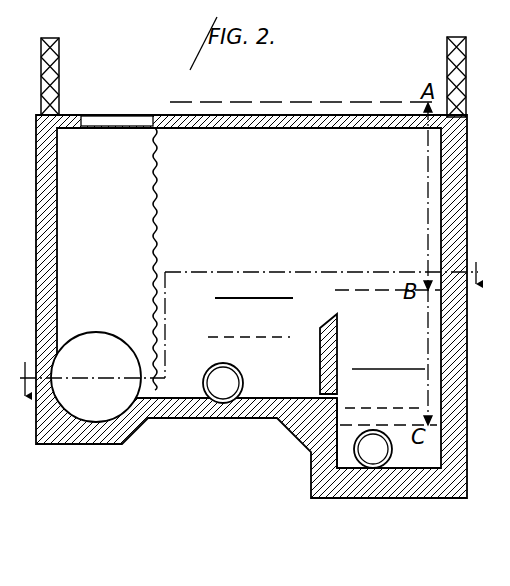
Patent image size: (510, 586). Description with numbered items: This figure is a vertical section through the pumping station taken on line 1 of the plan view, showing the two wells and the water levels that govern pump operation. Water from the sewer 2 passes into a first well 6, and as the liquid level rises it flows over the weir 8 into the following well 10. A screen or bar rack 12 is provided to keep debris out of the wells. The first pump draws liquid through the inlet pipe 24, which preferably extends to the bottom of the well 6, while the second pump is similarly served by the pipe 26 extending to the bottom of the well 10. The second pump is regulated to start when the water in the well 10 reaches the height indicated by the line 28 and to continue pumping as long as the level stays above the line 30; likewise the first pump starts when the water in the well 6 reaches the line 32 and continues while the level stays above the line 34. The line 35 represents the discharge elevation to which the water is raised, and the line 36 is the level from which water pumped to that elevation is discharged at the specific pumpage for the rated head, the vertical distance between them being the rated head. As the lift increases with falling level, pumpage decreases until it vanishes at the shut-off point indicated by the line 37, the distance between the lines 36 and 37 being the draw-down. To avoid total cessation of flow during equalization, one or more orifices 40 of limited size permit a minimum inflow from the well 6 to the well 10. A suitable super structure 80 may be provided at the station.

The flow direction arrow 1 is at (488, 270).
The sewer 2 is at (98, 407).
The first well 6 is at (288, 338).
The weir 8 is at (338, 333).
The following well 10 is at (428, 455).
The screen or bar rack 12 is at (162, 191).
The inlet pipe 24 is at (222, 390).
The pipe 26 is at (372, 457).
The line 28 is at (420, 369).
The line 30 is at (417, 410).
The line 32 is at (217, 298).
The line 34 is at (220, 337).
The line 35 is at (313, 101).
The line 36 is at (345, 288).
The line 37 is at (330, 445).
The orifice 40 is at (333, 395).
The super structure 80 is at (462, 86).